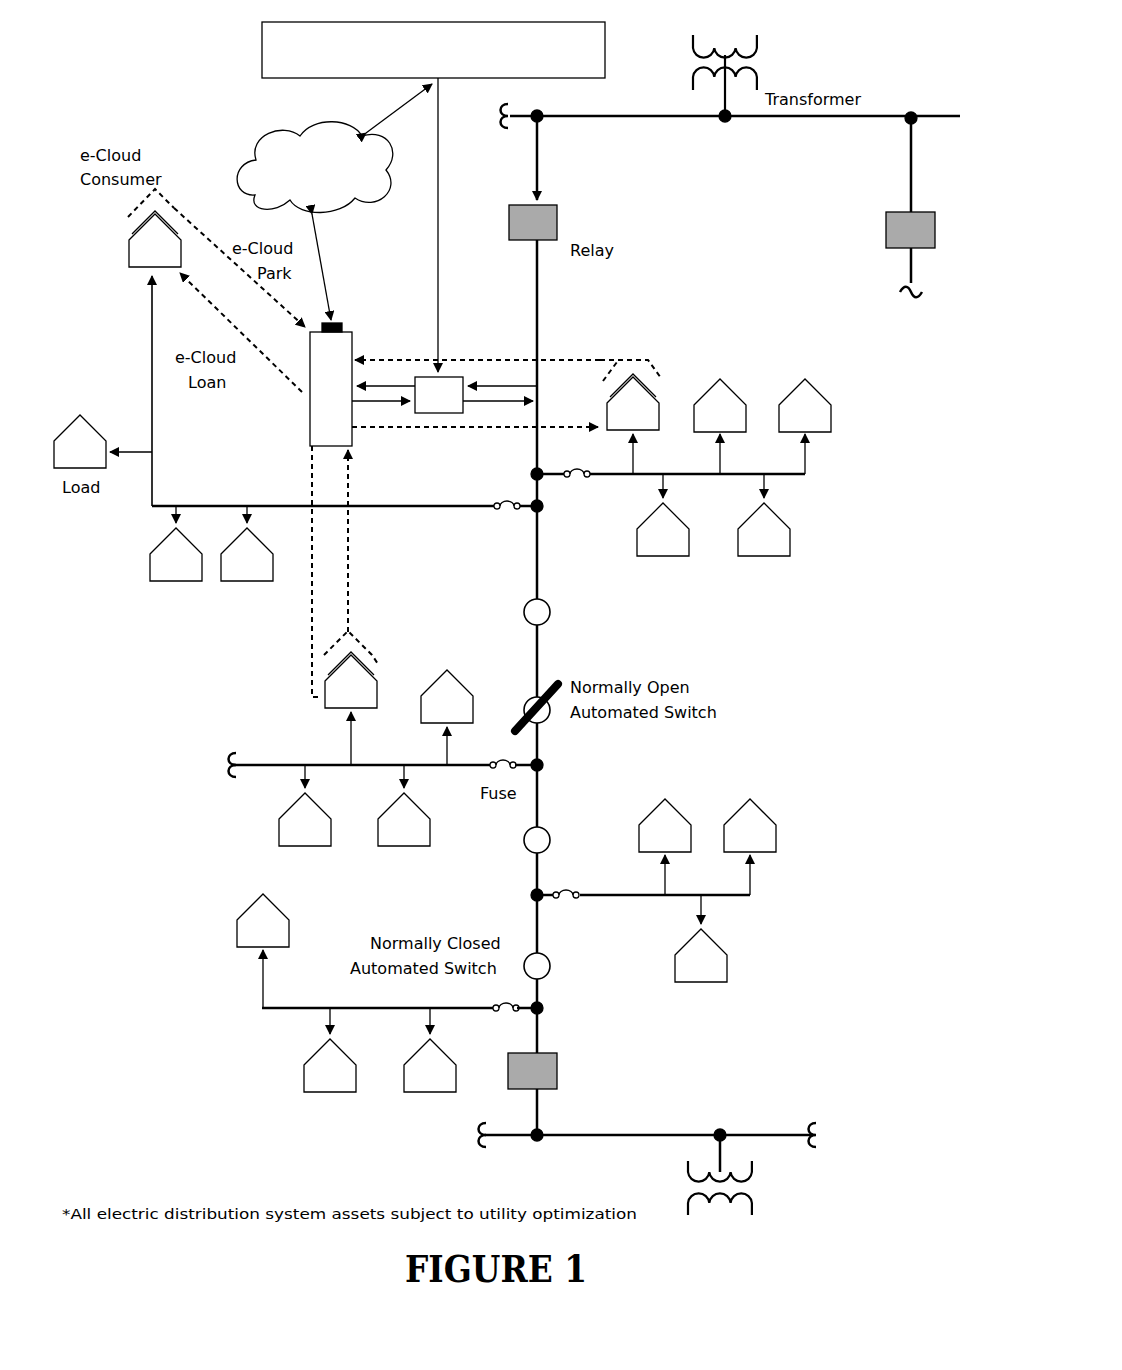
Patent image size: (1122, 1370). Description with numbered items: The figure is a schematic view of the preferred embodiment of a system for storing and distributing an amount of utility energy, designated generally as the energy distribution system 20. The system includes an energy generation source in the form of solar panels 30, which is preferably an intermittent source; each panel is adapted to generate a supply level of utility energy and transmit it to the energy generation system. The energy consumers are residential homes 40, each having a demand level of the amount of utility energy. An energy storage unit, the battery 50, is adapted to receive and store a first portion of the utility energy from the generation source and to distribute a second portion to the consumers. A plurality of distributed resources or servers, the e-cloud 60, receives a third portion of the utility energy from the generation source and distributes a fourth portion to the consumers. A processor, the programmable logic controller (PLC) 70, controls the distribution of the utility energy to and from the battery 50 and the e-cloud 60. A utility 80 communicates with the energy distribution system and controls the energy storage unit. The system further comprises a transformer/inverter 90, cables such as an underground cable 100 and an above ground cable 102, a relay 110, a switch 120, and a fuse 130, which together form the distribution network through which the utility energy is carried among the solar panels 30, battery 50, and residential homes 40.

The energy distribution system 20 is at (784, 646).
The solar panels 30 is at (127, 234).
The residential homes 40 is at (127, 263).
The battery 50 is at (308, 418).
The e-cloud 60 is at (266, 156).
The programmable logic controller (PLC) 70 is at (455, 377).
The utility 80 is at (262, 44).
The transformer/inverter 90 is at (762, 67).
The underground cable 100 is at (795, 480).
The above ground cable 102 is at (539, 565).
The relay 110 is at (560, 1072).
The switch 120 is at (548, 720).
The fuse 130 is at (497, 512).